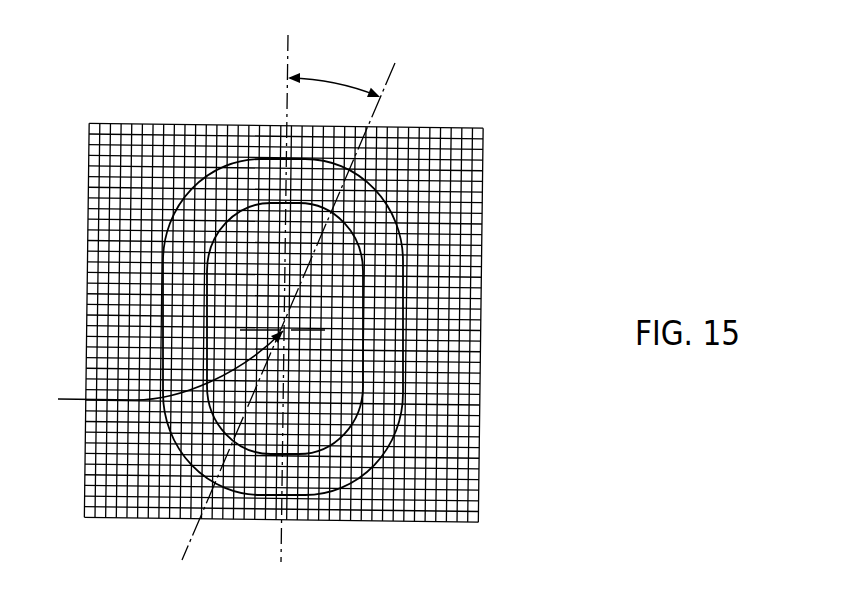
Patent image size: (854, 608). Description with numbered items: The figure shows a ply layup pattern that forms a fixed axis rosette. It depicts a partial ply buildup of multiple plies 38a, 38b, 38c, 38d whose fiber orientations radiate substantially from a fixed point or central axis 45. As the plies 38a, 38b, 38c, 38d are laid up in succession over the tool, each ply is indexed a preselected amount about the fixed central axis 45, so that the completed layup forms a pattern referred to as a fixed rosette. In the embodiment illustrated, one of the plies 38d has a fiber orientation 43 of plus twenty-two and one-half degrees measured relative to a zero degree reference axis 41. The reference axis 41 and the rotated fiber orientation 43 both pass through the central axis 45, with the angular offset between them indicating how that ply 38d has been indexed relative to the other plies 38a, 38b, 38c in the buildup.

The ply 38a is at (462, 483).
The ply 38b is at (520, 350).
The ply 38c is at (507, 404).
The ply 38d is at (500, 217).
The 0 degree reference axis 41 is at (288, 47).
The fiber orientation 43 is at (387, 90).
The central axis 45 is at (155, 370).